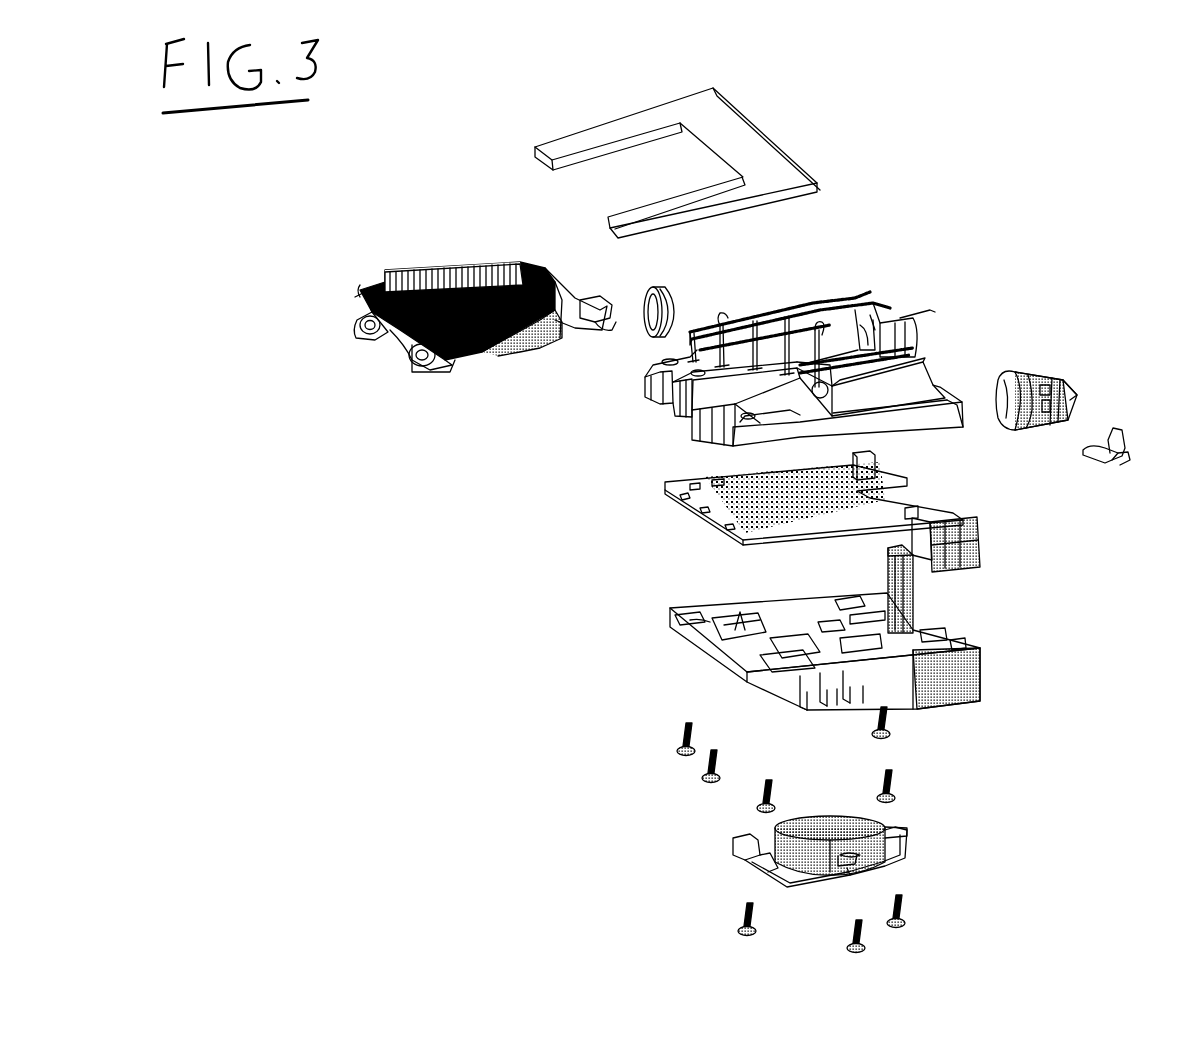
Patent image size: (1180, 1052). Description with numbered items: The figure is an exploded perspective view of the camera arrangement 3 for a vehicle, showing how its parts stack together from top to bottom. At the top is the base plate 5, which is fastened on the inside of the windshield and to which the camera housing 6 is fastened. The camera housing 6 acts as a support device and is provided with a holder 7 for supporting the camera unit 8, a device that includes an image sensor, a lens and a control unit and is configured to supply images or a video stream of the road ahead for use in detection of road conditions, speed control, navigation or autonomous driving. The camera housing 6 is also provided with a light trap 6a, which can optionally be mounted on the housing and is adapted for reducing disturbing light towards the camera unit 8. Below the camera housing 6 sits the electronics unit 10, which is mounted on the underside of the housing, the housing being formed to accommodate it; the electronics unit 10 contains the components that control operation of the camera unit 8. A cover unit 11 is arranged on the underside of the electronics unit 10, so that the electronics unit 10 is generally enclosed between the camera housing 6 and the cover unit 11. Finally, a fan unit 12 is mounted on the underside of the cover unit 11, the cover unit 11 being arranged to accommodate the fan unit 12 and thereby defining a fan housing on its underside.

The camera arrangement 3 is at (1087, 628).
The base plate 5 is at (778, 163).
The camera housing 6 is at (937, 420).
The light trap 6a is at (520, 340).
The holder 7 is at (870, 292).
The camera unit 8 is at (1010, 370).
The electronics unit 10 is at (682, 497).
The cover unit 11 is at (670, 625).
The fan unit 12 is at (877, 823).